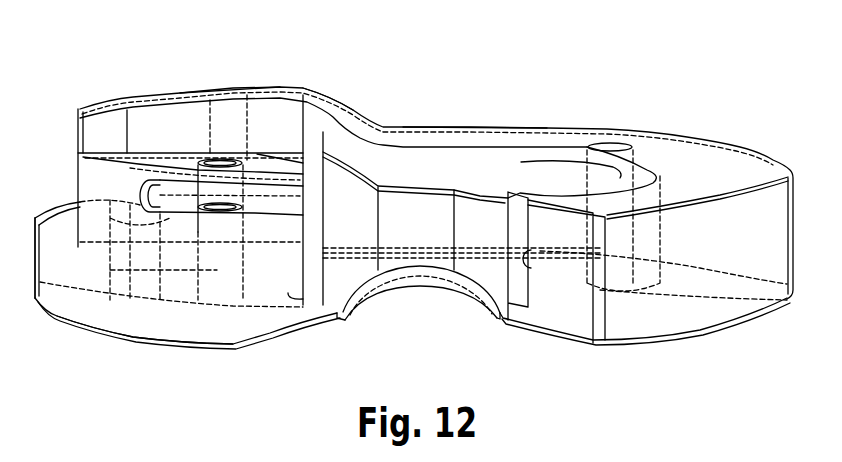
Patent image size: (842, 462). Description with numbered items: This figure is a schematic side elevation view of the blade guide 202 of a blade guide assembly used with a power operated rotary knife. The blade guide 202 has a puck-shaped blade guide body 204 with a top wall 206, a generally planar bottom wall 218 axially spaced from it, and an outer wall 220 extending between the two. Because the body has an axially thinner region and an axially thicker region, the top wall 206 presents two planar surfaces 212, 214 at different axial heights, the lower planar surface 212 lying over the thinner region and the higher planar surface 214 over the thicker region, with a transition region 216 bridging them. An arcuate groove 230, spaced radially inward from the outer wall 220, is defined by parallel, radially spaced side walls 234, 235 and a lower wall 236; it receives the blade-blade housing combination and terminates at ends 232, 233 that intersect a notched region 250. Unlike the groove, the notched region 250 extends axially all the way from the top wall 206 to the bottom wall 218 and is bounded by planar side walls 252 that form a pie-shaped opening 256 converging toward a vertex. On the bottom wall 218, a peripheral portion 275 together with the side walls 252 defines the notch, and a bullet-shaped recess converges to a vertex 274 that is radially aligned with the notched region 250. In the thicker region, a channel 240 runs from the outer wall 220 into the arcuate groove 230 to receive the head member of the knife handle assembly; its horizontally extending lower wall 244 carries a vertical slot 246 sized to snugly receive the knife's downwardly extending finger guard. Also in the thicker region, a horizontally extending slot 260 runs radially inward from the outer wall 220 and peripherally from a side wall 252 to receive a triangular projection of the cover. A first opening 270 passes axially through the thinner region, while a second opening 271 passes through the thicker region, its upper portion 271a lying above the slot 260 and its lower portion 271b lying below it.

The blade guide 202 is at (758, 114).
The blade guide body 204 is at (801, 191).
The top wall 206 is at (691, 139).
The planar surface 212 is at (425, 137).
The planar surface 214 is at (270, 97).
The transition region 216 is at (330, 100).
The bottom wall 218 is at (133, 343).
The outer wall 220 is at (36, 281).
The arcuate groove 230 is at (520, 283).
The end of arcuate groove 232 is at (321, 184).
The end of arcuate groove 233 is at (507, 212).
The side wall 234 is at (513, 240).
The side wall 235 is at (532, 255).
The lower wall 236 is at (303, 298).
The channel 240 is at (147, 140).
The lower wall 244 is at (58, 215).
The vertical slot 246 is at (125, 284).
The notched region 250 is at (433, 287).
The side walls 252 is at (337, 237).
The pie-shaped opening 256 is at (529, 349).
The horizontally extending slot 260 is at (287, 192).
The first opening 270 is at (635, 173).
The second opening 271 is at (197, 305).
The upper portion of second opening 271a is at (223, 160).
The lower portion of second opening 271b is at (253, 317).
The vertex 274 is at (400, 288).
The peripheral portion 275 is at (437, 268).